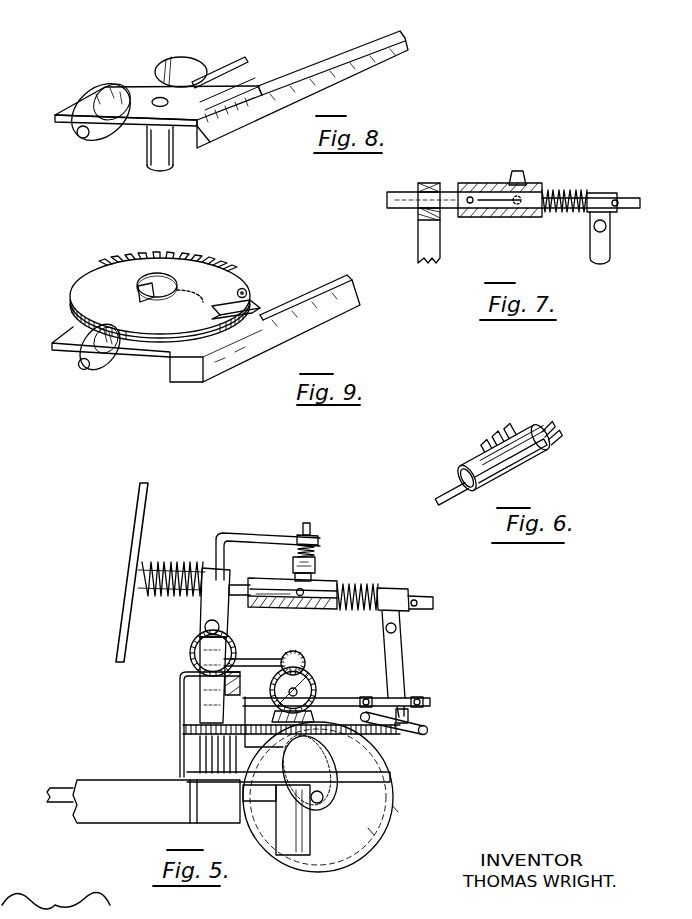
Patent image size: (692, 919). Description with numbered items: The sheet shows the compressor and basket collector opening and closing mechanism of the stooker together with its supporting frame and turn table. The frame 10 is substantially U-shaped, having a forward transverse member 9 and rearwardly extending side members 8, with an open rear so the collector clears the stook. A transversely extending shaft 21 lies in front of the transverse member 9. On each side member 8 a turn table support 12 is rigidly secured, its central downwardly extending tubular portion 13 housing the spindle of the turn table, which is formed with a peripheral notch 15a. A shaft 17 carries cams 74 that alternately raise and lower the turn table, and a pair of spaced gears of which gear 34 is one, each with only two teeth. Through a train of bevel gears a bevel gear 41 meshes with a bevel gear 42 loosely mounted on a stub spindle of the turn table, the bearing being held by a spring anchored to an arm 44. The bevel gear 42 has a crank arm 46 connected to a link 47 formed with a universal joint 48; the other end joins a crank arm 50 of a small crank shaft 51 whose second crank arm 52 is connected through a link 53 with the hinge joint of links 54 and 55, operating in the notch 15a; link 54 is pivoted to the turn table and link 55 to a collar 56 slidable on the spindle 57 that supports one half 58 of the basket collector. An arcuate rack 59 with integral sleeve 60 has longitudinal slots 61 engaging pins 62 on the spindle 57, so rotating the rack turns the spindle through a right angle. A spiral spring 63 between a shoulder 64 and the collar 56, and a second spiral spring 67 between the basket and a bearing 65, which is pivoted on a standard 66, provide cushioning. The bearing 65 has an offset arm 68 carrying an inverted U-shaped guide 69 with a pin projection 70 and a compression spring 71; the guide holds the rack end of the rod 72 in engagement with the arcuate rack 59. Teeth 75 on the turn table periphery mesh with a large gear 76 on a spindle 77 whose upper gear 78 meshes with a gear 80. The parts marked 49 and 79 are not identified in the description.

In FIG. 8, the side members 8 is at (330, 80).
In FIG. 9, the side members 8 is at (307, 322).
In FIG. 5, the side members 8 is at (205, 802).
In FIG. 5, the forward transverse member 9 is at (120, 782).
In FIG. 5, the frame 10 is at (200, 776).
In FIG. 8, the turn table support 12 is at (243, 88).
In FIG. 9, the turn table support 12 is at (73, 330).
In FIG. 5, the turn table support 12 is at (258, 803).
In FIG. 8, the tubular portion 13 is at (150, 151).
In FIG. 5, the tubular portion 13 is at (285, 853).
In FIG. 9, the peripheral notch 15a is at (251, 308).
In FIG. 8, the shaft 17 is at (83, 132).
In FIG. 9, the shaft 17 is at (81, 370).
In FIG. 5, the shaft 17 is at (321, 805).
In FIG. 5, the transversely extending shaft 21 is at (60, 788).
In FIG. 5, the gear 34 is at (370, 830).
In FIG. 5, the bevel gear 41 is at (300, 660).
In FIG. 9, the bevel gear 42 is at (165, 280).
In FIG. 5, the bevel gear 42 is at (306, 682).
In FIG. 5, the arm 44 is at (262, 662).
In FIG. 9, the crank arm 46 is at (140, 287).
In FIG. 5, the crank arm 46 is at (306, 703).
In FIG. 5, the link 47 is at (357, 697).
In FIG. 5, the universal joint 48 is at (405, 698).
In FIG. 5, the pivot 49 is at (417, 702).
In FIG. 5, the crank arm 50 is at (425, 706).
In FIG. 5, the crank shaft 51 is at (405, 740).
In FIG. 5, the crank arm 52 is at (426, 735).
In FIG. 5, the link 53 is at (428, 722).
In FIG. 5, the link 54 is at (385, 740).
In FIG. 7, the link 55 is at (612, 240).
In FIG. 5, the link 55 is at (403, 653).
In FIG. 7, the collar 56 is at (600, 193).
In FIG. 5, the collar 56 is at (396, 588).
In FIG. 7, the spindle 57 is at (628, 197).
In FIG. 5, the spindle 57 is at (426, 598).
In FIG. 5, the basket collector half 58 is at (136, 558).
In FIG. 7, the arcuate rack 59 is at (519, 170).
In FIG. 6, the arcuate rack 59 is at (497, 432).
In FIG. 5, the arcuate rack 59 is at (316, 604).
In FIG. 7, the sleeve 60 is at (480, 183).
In FIG. 6, the sleeve 60 is at (490, 458).
In FIG. 5, the sleeve 60 is at (288, 609).
In FIG. 6, the longitudinal slots 61 is at (452, 497).
In FIG. 5, the longitudinal slots 61 is at (263, 587).
In FIG. 7, the pins 62 is at (488, 215).
In FIG. 5, the pins 62 is at (278, 592).
In FIG. 7, the spiral spring 63 is at (568, 190).
In FIG. 5, the spiral spring 63 is at (362, 586).
In FIG. 7, the shoulder 64 is at (526, 190).
In FIG. 7, the bearing 65 is at (418, 237).
In FIG. 5, the bearing 65 is at (212, 585).
In FIG. 5, the standard 66 is at (190, 655).
In FIG. 5, the second spiral spring 67 is at (156, 567).
In FIG. 5, the offset arm 68 is at (250, 533).
In FIG. 5, the guide 69 is at (314, 552).
In FIG. 8, the pin projection 70 is at (252, 117).
In FIG. 9, the pin projection 70 is at (288, 310).
In FIG. 5, the pin projection 70 is at (307, 523).
In FIG. 5, the compression spring 71 is at (293, 562).
In FIG. 5, the rod 72 is at (316, 566).
In FIG. 8, the cams 74 is at (182, 68).
In FIG. 9, the cams 74 is at (100, 352).
In FIG. 5, the cams 74 is at (334, 786).
In FIG. 9, the teeth 75 is at (123, 262).
In FIG. 5, the teeth 75 is at (192, 728).
In FIG. 5, the large gear 76 is at (200, 748).
In FIG. 8, the spindle 77 is at (220, 48).
In FIG. 5, the gear 78 is at (180, 682).
In FIG. 5, the disk rim 79 is at (393, 805).
In FIG. 5, the gear 80 is at (205, 628).